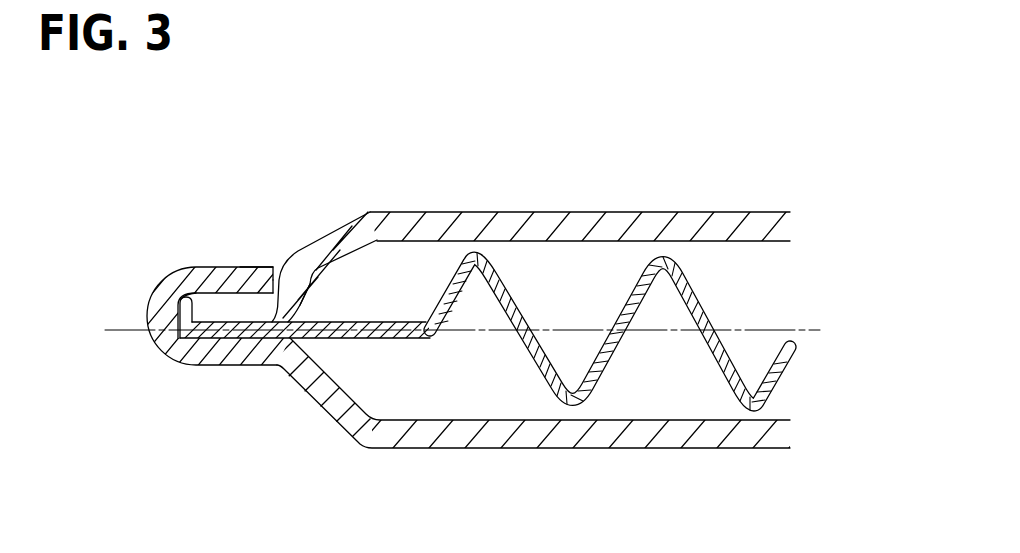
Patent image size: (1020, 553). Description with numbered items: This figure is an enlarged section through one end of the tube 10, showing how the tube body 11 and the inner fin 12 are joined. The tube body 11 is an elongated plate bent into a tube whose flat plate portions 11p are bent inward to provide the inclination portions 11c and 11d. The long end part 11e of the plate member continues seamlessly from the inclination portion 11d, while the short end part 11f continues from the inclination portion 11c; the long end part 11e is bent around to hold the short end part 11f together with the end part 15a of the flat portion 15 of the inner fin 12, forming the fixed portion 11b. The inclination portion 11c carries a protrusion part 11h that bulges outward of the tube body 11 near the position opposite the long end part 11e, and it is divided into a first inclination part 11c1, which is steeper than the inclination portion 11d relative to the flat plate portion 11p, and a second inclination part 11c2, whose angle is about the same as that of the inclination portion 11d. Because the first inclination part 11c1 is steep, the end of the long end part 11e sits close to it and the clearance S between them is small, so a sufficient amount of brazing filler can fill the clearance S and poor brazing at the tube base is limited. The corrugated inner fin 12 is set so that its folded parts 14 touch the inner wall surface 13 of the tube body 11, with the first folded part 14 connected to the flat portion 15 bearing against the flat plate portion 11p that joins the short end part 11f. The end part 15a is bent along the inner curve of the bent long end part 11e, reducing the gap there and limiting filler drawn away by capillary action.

The tube 10 is at (116, 250).
The tube body 11 is at (643, 211).
The fixed portion 11b is at (214, 378).
The inclination portion 11c is at (318, 230).
The first inclination part 11c1 is at (286, 290).
The second inclination part 11c2 is at (336, 243).
The inclination portion 11d is at (332, 422).
The long end part 11e is at (264, 270).
The short end part 11f is at (206, 310).
The protrusion part 11h is at (330, 272).
The flat plate portion 11p is at (436, 212).
The inner fin 12 is at (720, 306).
The inner wall surface 13 is at (746, 242).
The folded part 14 is at (492, 238).
The flat portion 15 is at (385, 338).
The end part of the flat portion 15a is at (183, 305).
The clearance S is at (276, 250).